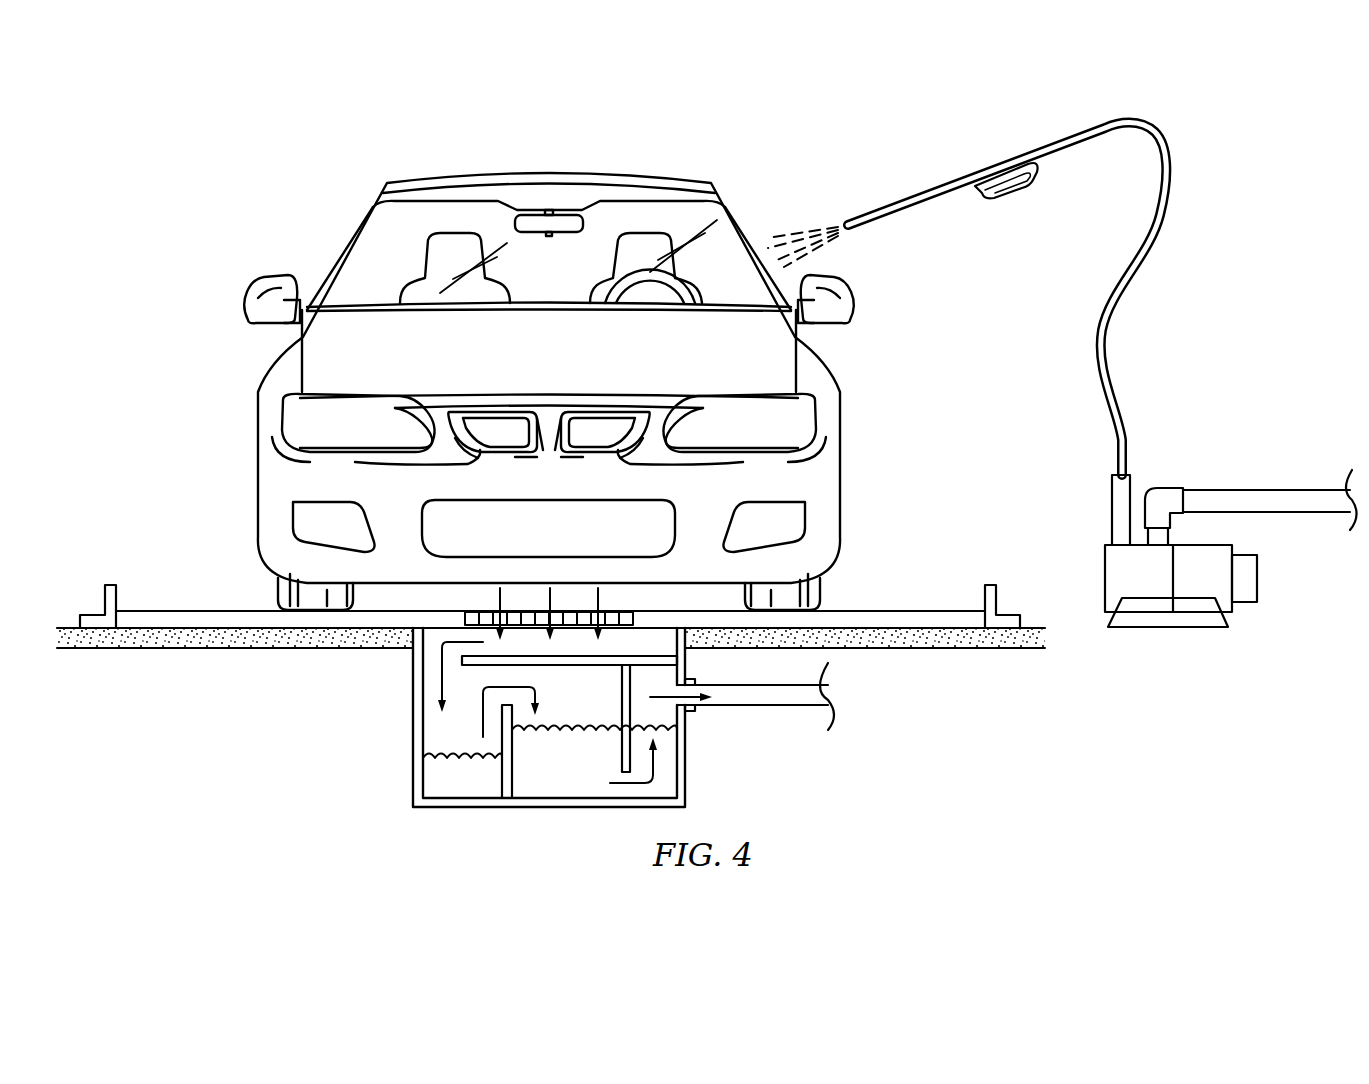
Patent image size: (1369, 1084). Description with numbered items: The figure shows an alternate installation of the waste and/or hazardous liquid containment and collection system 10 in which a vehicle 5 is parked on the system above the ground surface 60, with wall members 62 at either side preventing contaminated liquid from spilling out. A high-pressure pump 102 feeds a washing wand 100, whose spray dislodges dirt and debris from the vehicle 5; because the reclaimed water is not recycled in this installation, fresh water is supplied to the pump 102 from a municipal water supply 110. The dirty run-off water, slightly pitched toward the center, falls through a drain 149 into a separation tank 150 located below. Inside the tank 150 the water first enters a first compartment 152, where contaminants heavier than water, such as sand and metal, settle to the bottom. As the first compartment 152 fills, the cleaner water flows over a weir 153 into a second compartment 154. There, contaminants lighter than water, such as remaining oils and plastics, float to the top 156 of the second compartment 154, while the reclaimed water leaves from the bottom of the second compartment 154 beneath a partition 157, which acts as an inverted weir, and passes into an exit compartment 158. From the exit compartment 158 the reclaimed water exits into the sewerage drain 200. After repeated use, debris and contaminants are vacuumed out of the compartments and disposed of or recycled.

The vehicle 5 is at (350, 192).
The waste and/or hazardous liquid containment and collection system 10 is at (886, 577).
The ground surface 60 is at (232, 650).
The wall members 62 is at (104, 598).
The washing wand 100 is at (997, 175).
The high-pressure pump 102 is at (1115, 565).
The municipal water supply 110 is at (1253, 490).
The drain 149 is at (623, 598).
The separation tank 150 is at (385, 803).
The first compartment 152 is at (447, 728).
The weir 153 is at (503, 778).
The second compartment 154 is at (569, 777).
The top of the second compartment 156 is at (587, 723).
The partition 157 is at (625, 752).
The exit compartment 158 is at (665, 782).
The sewerage drain 200 is at (763, 705).